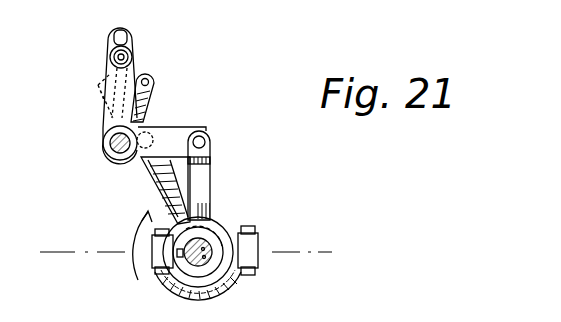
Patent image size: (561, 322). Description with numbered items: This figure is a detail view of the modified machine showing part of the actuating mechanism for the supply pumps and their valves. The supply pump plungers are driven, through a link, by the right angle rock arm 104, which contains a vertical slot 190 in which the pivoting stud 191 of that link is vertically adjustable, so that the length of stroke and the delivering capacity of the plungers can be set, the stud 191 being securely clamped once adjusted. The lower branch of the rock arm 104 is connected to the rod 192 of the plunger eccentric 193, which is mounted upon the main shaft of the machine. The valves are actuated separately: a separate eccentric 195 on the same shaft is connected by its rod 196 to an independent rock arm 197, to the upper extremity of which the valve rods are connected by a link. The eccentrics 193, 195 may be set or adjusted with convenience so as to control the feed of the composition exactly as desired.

The vertical slot 190 is at (131, 35).
The pivoting stud 191 is at (132, 59).
The right angle rock arm 104 is at (148, 110).
The independent rock arm 197 is at (146, 117).
The rod 196 is at (160, 176).
The rod 192 is at (202, 177).
The plunger eccentric 193 is at (216, 266).
The separate eccentric 195 is at (172, 296).